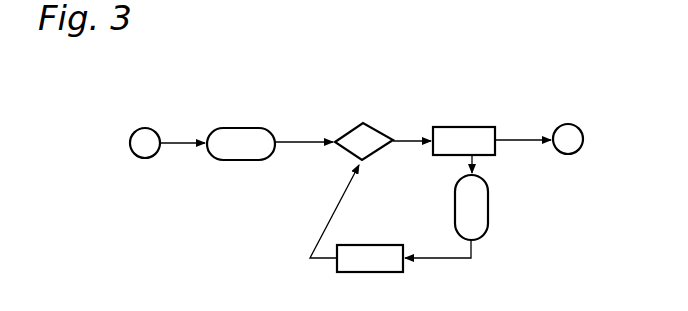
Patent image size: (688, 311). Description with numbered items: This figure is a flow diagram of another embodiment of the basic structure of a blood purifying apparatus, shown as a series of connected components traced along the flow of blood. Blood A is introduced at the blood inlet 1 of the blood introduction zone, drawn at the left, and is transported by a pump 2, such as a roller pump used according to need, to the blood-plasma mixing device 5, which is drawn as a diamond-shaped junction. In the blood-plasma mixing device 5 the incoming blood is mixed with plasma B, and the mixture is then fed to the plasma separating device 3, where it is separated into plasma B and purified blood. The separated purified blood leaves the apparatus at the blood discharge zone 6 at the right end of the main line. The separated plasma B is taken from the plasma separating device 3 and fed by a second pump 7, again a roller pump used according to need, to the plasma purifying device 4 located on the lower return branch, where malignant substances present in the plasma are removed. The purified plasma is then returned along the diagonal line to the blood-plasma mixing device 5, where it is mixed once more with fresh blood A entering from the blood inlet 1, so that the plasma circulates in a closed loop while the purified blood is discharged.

The blood inlet 1 is at (143, 128).
The blood A is at (181, 143).
The pump 2 is at (243, 128).
The blood-plasma mixing device 5 is at (371, 126).
The plasma separating device 3 is at (465, 130).
The blood discharge zone 6 is at (566, 124).
The plasma B is at (475, 162).
The pump 7 is at (488, 210).
The plasma purifying device 4 is at (372, 272).